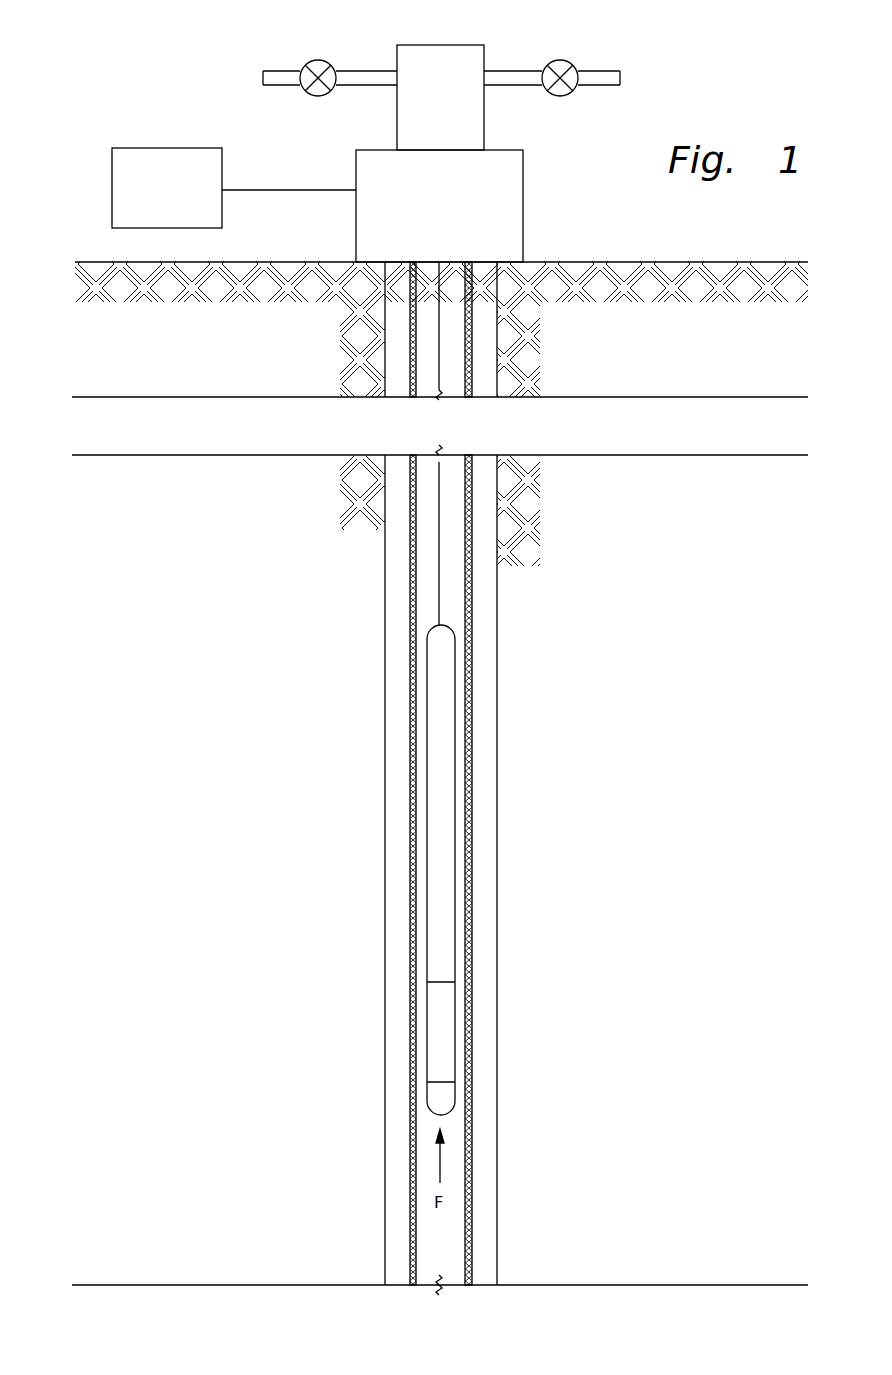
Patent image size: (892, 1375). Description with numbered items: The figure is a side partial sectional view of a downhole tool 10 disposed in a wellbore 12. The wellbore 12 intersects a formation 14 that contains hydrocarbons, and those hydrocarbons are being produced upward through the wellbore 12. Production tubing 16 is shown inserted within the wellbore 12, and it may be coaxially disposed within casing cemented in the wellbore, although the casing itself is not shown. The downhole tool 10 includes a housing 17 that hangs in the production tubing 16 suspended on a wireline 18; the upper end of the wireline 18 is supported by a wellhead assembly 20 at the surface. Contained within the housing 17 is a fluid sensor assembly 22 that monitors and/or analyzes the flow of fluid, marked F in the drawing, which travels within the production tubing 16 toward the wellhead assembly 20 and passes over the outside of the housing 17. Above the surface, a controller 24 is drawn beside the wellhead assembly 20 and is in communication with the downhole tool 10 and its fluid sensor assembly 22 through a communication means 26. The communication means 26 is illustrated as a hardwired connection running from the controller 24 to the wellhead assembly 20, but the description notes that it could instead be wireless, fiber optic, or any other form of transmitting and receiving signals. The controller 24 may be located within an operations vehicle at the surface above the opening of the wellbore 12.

The downhole tool 10 is at (441, 870).
The wellbore 12 is at (443, 1250).
The formation 14 is at (534, 507).
The production tubing 16 is at (410, 781).
The housing 17 is at (427, 688).
The wireline 18 is at (439, 590).
The wellhead assembly 20 is at (256, 27).
The fluid sensor assembly 22 is at (440, 1052).
The controller 24 is at (112, 173).
The communication means 26 is at (292, 188).